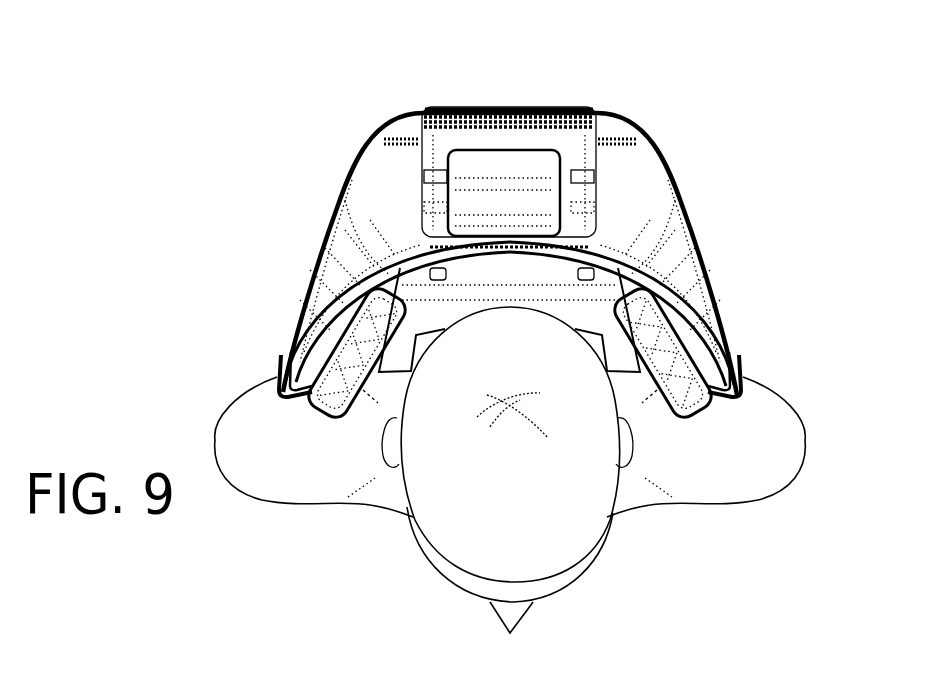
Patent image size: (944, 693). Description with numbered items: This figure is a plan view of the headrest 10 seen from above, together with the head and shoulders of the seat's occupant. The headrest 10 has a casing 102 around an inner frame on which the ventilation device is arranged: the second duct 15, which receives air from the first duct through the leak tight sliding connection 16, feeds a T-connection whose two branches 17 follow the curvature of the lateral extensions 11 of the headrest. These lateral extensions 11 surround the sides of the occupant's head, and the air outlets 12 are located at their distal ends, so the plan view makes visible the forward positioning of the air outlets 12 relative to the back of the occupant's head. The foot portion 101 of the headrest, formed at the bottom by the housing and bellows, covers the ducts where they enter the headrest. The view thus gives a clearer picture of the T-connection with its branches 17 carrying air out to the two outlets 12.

The headrest 10 is at (701, 121).
The casing 102 is at (380, 192).
The air outlets 12 is at (275, 378).
The branches 17 is at (270, 351).
The foot portion 101 is at (575, 140).
The sliding connection 16 is at (467, 150).
The second duct 15 is at (503, 160).
The lateral extensions 11 is at (283, 435).